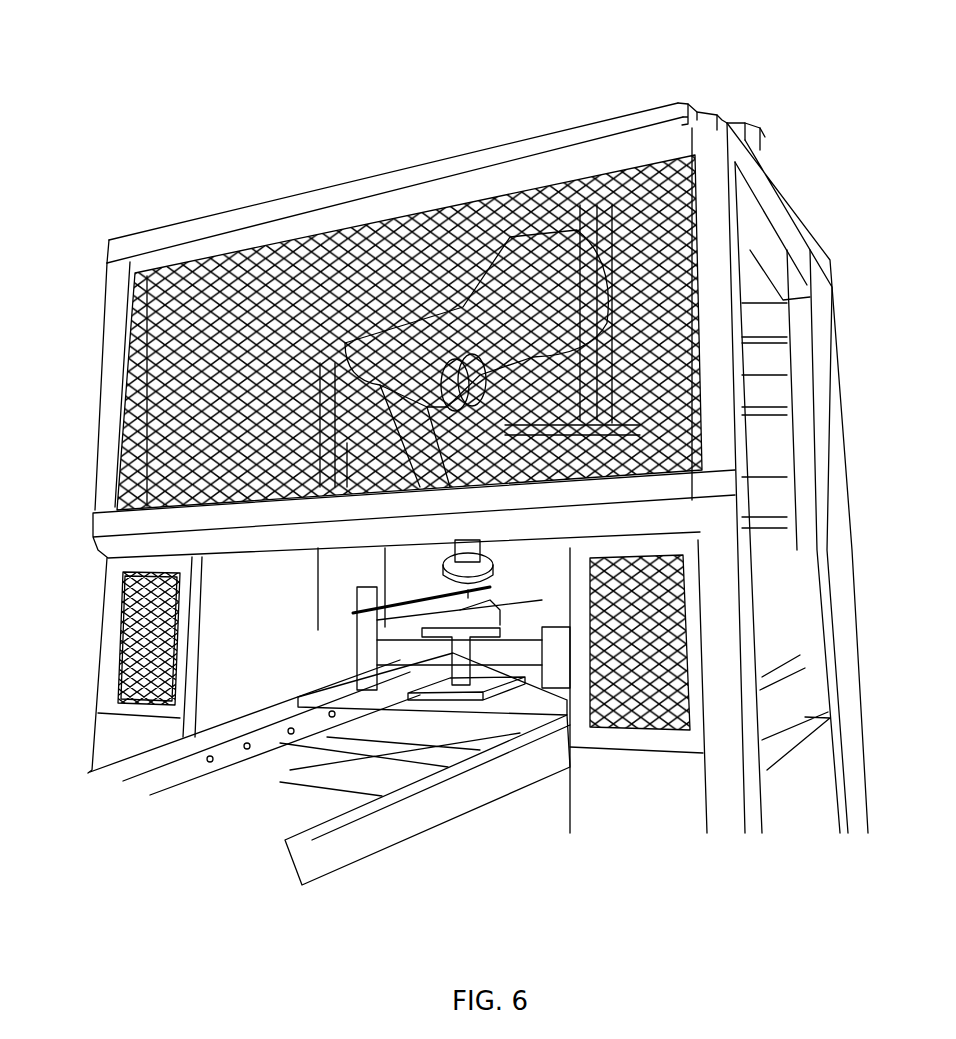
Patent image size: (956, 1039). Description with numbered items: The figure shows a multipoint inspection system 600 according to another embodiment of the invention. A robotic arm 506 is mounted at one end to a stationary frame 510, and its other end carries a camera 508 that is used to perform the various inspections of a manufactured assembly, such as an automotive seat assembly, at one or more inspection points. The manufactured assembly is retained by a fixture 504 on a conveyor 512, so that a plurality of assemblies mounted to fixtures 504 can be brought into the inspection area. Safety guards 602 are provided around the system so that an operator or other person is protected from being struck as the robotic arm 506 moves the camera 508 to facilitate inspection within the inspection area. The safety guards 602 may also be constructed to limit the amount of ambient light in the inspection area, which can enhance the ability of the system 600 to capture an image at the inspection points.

The multipoint inspection system 600 is at (289, 133).
The safety guards 602 is at (101, 335).
The robotic arm 506 is at (400, 237).
The stationary frame 510 is at (480, 346).
The camera 508 is at (490, 560).
The fixture 504 is at (335, 690).
The conveyor 512 is at (400, 828).